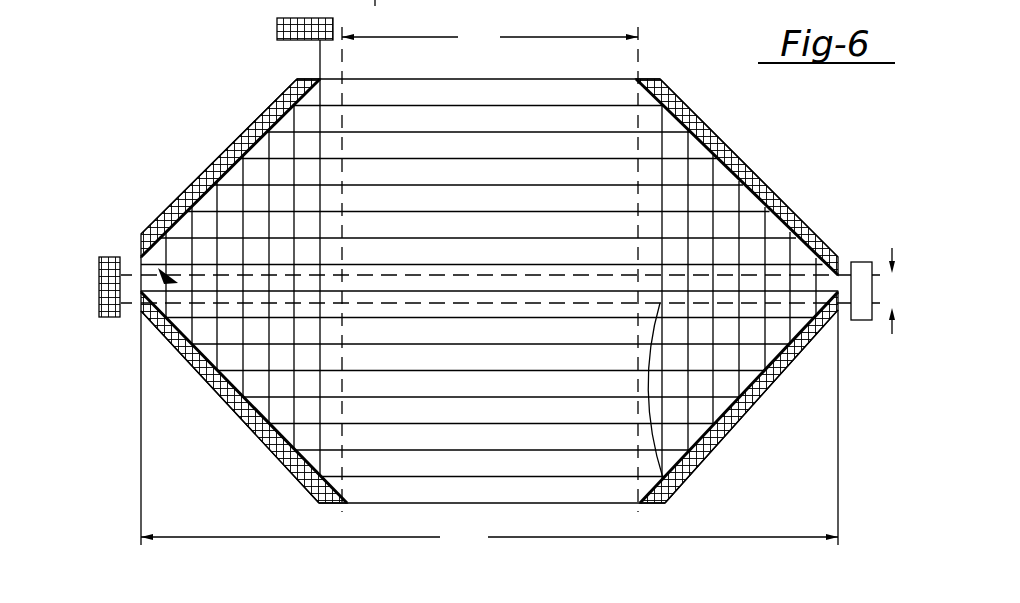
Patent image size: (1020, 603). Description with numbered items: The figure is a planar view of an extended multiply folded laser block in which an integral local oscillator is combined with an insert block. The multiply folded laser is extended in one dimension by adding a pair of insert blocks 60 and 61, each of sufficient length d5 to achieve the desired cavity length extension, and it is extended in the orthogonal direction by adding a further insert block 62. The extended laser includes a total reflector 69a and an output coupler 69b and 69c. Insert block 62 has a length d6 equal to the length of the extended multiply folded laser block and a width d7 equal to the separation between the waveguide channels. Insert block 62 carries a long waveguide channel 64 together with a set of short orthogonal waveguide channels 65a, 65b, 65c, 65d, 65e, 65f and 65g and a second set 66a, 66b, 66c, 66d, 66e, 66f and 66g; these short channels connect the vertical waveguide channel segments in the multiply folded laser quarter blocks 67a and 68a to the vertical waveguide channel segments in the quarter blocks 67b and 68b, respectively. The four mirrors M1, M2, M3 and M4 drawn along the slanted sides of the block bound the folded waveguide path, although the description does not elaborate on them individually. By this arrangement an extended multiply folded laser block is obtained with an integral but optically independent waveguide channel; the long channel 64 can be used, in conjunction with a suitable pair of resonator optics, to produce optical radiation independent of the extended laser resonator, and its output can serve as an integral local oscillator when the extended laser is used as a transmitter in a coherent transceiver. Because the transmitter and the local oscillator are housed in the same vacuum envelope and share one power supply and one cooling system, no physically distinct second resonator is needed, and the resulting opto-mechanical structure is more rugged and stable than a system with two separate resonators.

The insert block 60 is at (551, 142).
The insert block 61 is at (484, 418).
The insert block 62 is at (141, 266).
The long waveguide channel 64 is at (141, 256).
The short orthogonal waveguide channel 65a is at (140, 306).
The short orthogonal waveguide channel 65b is at (189, 303).
The short orthogonal waveguide channel 65c is at (216, 303).
The short orthogonal waveguide channel 65d is at (242, 303).
The short orthogonal waveguide channel 65e is at (268, 303).
The short orthogonal waveguide channel 65f is at (293, 303).
The short orthogonal waveguide channel 65g is at (318, 303).
The short orthogonal waveguide channel 66a is at (847, 313).
The short orthogonal waveguide channel 66b is at (843, 317).
The short orthogonal waveguide channel 66c is at (795, 303).
The short orthogonal waveguide channel 66d is at (768, 303).
The short orthogonal waveguide channel 66e is at (742, 303).
The short orthogonal waveguide channel 66f is at (715, 303).
The short orthogonal waveguide channel 66g is at (690, 303).
The multiply folded laser quarter block 67a is at (283, 175).
The multiply folded laser quarter block 67b is at (233, 395).
The multiply folded laser quarter block 68a is at (697, 203).
The multiply folded laser quarter block 68b is at (703, 390).
The total reflector 69a is at (99, 303).
The output coupler 69b is at (277, 29).
The output coupler 69c is at (856, 262).
The mirror M1 is at (637, 476).
The mirror M2 is at (340, 476).
The mirror M3 is at (203, 170).
The mirror M4 is at (763, 188).
The insert block length d5 is at (490, 40).
The insert block length d6 is at (489, 432).
The insert block width d7 is at (892, 291).